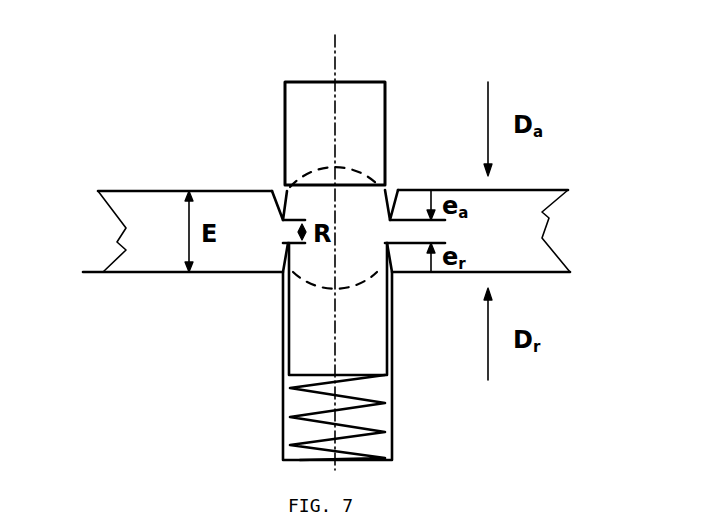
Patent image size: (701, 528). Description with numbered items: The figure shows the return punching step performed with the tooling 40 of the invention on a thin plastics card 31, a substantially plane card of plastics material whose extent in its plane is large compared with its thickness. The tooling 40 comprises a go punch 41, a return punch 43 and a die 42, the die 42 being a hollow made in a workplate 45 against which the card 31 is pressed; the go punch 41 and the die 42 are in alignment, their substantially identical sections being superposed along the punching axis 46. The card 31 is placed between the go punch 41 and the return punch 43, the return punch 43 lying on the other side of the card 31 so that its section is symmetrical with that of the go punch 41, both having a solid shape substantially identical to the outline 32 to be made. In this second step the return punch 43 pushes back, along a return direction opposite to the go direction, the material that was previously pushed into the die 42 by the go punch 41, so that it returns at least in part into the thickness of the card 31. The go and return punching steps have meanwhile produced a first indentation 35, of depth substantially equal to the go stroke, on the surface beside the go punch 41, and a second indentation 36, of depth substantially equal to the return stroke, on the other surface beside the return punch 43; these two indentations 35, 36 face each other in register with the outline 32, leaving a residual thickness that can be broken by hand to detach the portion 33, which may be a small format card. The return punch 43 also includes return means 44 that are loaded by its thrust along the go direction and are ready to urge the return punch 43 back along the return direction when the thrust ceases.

The tooling 40 is at (147, 68).
The go punch 41 is at (310, 100).
The die 42 is at (283, 290).
The return punch 43 is at (300, 330).
The return means 44 is at (285, 425).
The workplate 45 is at (163, 273).
The punching axis 46 is at (334, 42).
The thin plastics card 31 is at (155, 190).
The outline 32 is at (383, 242).
The portion 33 is at (305, 207).
The first indentation 35 is at (384, 192).
The second indentation 36 is at (394, 292).